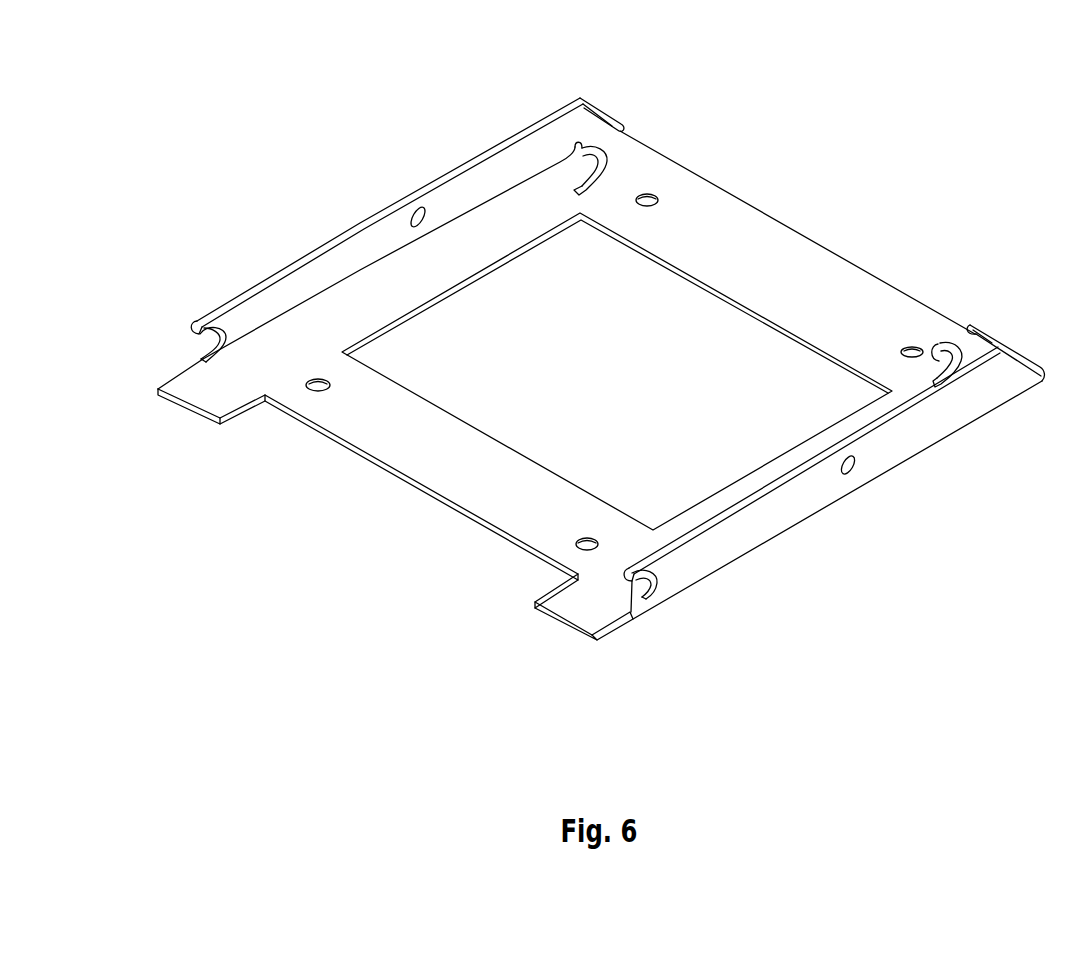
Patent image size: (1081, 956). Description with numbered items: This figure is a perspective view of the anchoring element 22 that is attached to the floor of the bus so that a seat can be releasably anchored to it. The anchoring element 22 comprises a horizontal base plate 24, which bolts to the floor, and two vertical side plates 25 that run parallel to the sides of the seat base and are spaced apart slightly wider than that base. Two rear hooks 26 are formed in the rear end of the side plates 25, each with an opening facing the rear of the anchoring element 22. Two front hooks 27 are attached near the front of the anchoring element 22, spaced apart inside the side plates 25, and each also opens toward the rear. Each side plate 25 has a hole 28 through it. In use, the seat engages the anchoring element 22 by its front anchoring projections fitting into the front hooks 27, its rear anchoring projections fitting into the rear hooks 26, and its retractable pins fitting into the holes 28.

The anchoring element 22 is at (922, 113).
The horizontal base plate 24 is at (533, 603).
The vertical side plate 25 is at (303, 262).
The rear hook 26 is at (197, 327).
The front hook 27 is at (604, 152).
The hole 28 is at (413, 213).